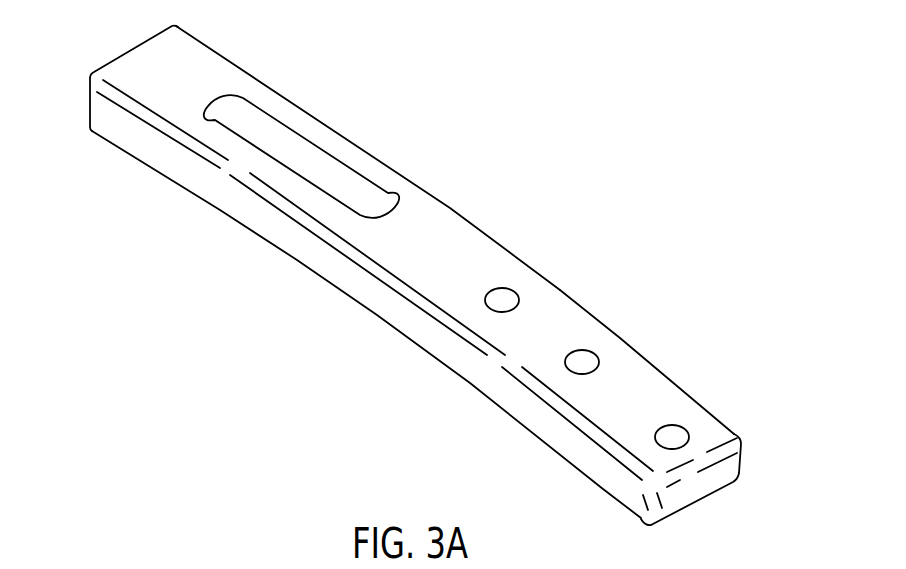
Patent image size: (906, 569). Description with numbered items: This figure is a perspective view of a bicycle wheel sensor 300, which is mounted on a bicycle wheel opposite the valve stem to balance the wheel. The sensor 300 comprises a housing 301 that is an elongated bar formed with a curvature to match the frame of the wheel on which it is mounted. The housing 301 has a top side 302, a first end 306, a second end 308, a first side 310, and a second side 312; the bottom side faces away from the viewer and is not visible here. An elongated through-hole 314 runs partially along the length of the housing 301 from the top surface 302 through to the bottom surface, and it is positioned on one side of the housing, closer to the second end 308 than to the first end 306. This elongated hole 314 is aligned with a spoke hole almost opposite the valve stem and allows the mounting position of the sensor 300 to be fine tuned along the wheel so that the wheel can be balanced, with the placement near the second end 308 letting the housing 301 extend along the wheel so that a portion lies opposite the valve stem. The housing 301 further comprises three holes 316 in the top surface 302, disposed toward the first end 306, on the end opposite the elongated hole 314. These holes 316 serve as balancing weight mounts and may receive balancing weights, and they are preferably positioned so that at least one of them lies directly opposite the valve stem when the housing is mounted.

The bicycle wheel sensor 300 is at (438, 220).
The housing 301 is at (308, 245).
The top side 302 is at (480, 272).
The first end 306 is at (738, 465).
The second end 308 is at (134, 48).
The first side 310 is at (392, 305).
The second side 312 is at (600, 322).
The elongated through-hole 314 is at (340, 175).
The holes 316 is at (502, 301).